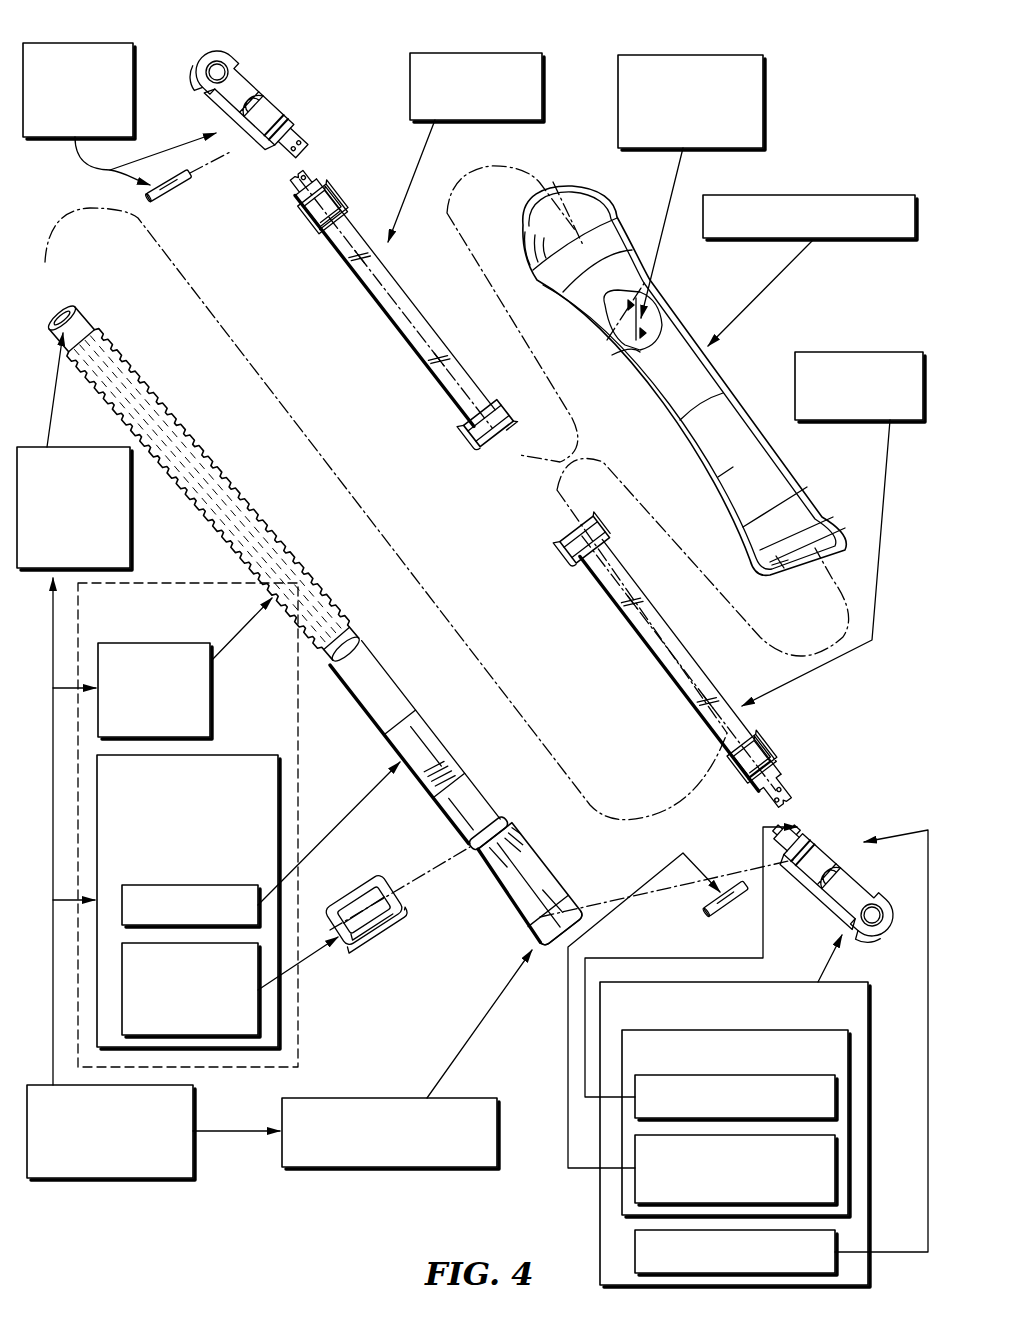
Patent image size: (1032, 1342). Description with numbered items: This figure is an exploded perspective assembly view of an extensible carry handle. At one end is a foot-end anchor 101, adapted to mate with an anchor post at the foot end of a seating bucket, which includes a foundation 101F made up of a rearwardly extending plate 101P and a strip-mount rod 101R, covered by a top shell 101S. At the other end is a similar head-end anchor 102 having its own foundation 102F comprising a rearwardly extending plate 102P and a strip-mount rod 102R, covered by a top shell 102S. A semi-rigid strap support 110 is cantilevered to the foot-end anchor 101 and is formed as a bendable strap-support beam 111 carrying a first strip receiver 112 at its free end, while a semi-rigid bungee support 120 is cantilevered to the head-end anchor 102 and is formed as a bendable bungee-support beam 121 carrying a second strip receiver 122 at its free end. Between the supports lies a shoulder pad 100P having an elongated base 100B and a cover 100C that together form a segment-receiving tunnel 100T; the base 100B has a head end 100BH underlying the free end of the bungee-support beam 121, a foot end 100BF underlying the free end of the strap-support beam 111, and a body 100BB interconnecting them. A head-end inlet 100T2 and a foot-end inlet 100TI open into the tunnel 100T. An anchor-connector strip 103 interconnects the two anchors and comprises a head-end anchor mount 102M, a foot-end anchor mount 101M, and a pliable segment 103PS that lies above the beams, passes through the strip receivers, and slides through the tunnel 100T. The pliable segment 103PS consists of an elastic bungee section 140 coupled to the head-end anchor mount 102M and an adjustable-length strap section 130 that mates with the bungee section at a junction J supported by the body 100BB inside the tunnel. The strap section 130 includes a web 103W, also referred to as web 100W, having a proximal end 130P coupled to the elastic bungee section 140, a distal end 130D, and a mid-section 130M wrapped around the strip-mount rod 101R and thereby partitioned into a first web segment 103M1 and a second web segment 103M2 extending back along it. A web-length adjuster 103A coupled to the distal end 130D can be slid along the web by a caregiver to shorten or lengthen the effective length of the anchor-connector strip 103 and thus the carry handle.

The elongated base 100B is at (576, 198).
The body 100BB is at (642, 350).
The foot end 100BF is at (790, 557).
The head end 100BH is at (637, 187).
The cover 100C is at (678, 366).
The shoulder pad 100P is at (843, 195).
The segment-receiving tunnel 100T is at (765, 95).
The head-end inlet 100T2 is at (550, 240).
The foot-end inlet 100TI is at (830, 535).
The web 100W is at (591, 826).
The foot-end anchor 101 is at (818, 978).
The foundation 101F is at (848, 1060).
The foot-end anchor mount 101M is at (348, 1098).
The rearwardly extending plate 101P is at (835, 1098).
The strip-mount rod 101R is at (835, 1180).
The top shell 101S is at (635, 1250).
The head-end anchor 102 is at (95, 43).
The foundation 102F is at (211, 258).
The head-end anchor mount 102M is at (70, 447).
The rearwardly extending plate 102P is at (270, 168).
The strip-mount rod 102R is at (168, 192).
The top shell 102S is at (277, 110).
The anchor-connector strip 103 is at (120, 1180).
The web-length adjuster 103A is at (263, 1013).
The first web segment 103M1 is at (427, 757).
The second web segment 103M2 is at (537, 917).
The pliable segment 103PS is at (165, 583).
The web 103W is at (197, 885).
The strap support 110 is at (828, 352).
The strap-support beam 111 is at (677, 693).
The first strip receiver 112 is at (575, 553).
The bungee support 120 is at (478, 53).
The bungee-support beam 121 is at (405, 332).
The second strip receiver 122 is at (483, 428).
The adjustable-length strap section 130 is at (245, 755).
The distal end 130D is at (523, 873).
The mid-section 130M is at (517, 783).
The proximal end 130P is at (398, 660).
The elastic bungee section 140 is at (213, 722).
The junction J is at (372, 622).